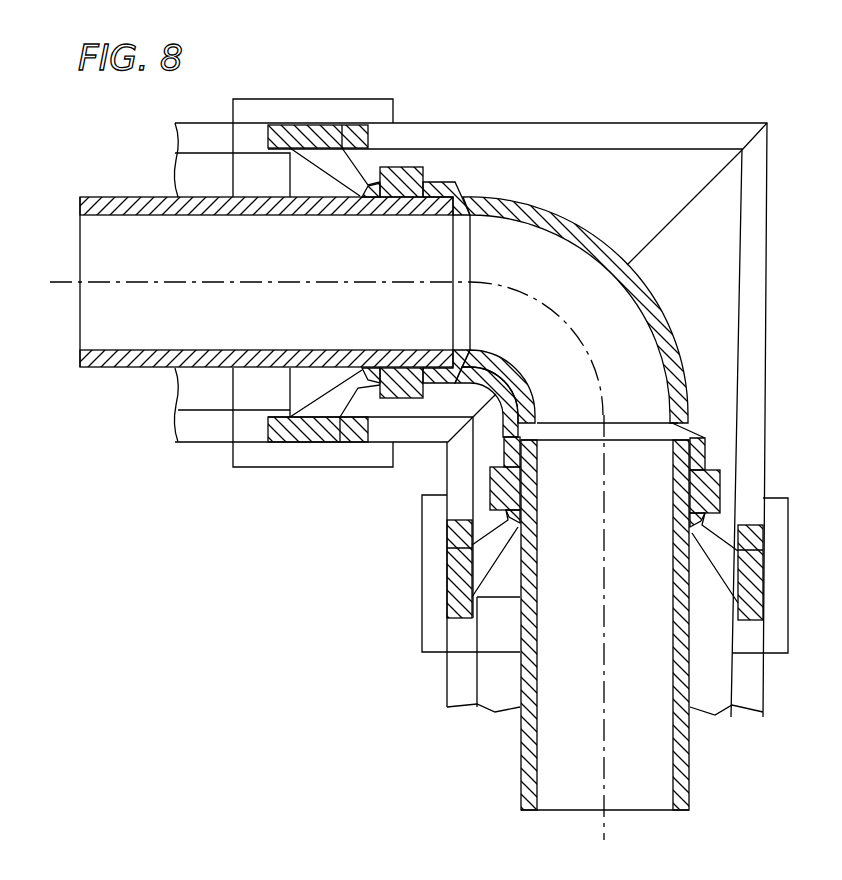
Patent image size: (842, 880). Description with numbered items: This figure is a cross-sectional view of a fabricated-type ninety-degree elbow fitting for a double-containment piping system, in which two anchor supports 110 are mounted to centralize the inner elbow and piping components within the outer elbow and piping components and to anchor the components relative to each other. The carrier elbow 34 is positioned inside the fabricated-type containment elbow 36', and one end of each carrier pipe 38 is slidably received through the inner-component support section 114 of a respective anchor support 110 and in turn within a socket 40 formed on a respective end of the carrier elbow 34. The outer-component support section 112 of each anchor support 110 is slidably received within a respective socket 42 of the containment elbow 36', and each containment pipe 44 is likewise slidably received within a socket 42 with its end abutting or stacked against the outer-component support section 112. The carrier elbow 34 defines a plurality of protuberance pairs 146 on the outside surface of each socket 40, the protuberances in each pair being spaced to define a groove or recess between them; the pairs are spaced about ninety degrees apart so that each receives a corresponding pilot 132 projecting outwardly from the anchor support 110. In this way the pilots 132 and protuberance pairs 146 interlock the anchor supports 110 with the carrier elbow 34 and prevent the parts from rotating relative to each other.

The carrier elbow 34 is at (672, 340).
The fabricated-type containment elbow 36' is at (471, 401).
The carrier pipe 38 is at (120, 372).
The socket 40 is at (442, 182).
The socket 42 is at (283, 100).
The containment pipe 44 is at (175, 140).
The anchor support 110 is at (335, 124).
The outer-component support section 112 is at (380, 366).
The inner-component support section 114 is at (300, 443).
The pilot 132 is at (373, 188).
The protuberance pair 146 is at (412, 168).